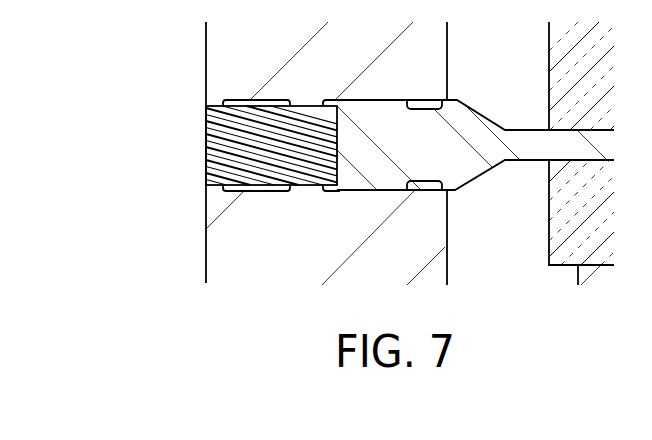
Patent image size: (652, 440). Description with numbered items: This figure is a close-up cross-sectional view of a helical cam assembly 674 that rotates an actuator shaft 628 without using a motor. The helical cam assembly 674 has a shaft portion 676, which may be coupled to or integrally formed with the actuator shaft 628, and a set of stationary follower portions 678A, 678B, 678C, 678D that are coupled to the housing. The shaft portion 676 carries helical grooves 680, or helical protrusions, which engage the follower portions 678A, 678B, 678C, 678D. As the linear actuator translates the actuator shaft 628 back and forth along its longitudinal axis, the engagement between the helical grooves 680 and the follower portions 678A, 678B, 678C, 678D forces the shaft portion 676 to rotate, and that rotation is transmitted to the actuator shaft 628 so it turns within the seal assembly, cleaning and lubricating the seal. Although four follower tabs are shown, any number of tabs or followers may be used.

The actuator shaft 628 is at (519, 128).
The helical cam assembly 674 is at (237, 158).
The shaft portion 676 is at (222, 130).
The follower portion 678A is at (211, 104).
The follower portion 678B is at (310, 102).
The follower portion 678C is at (208, 195).
The follower portion 678D is at (346, 203).
The helical grooves 680 is at (208, 114).